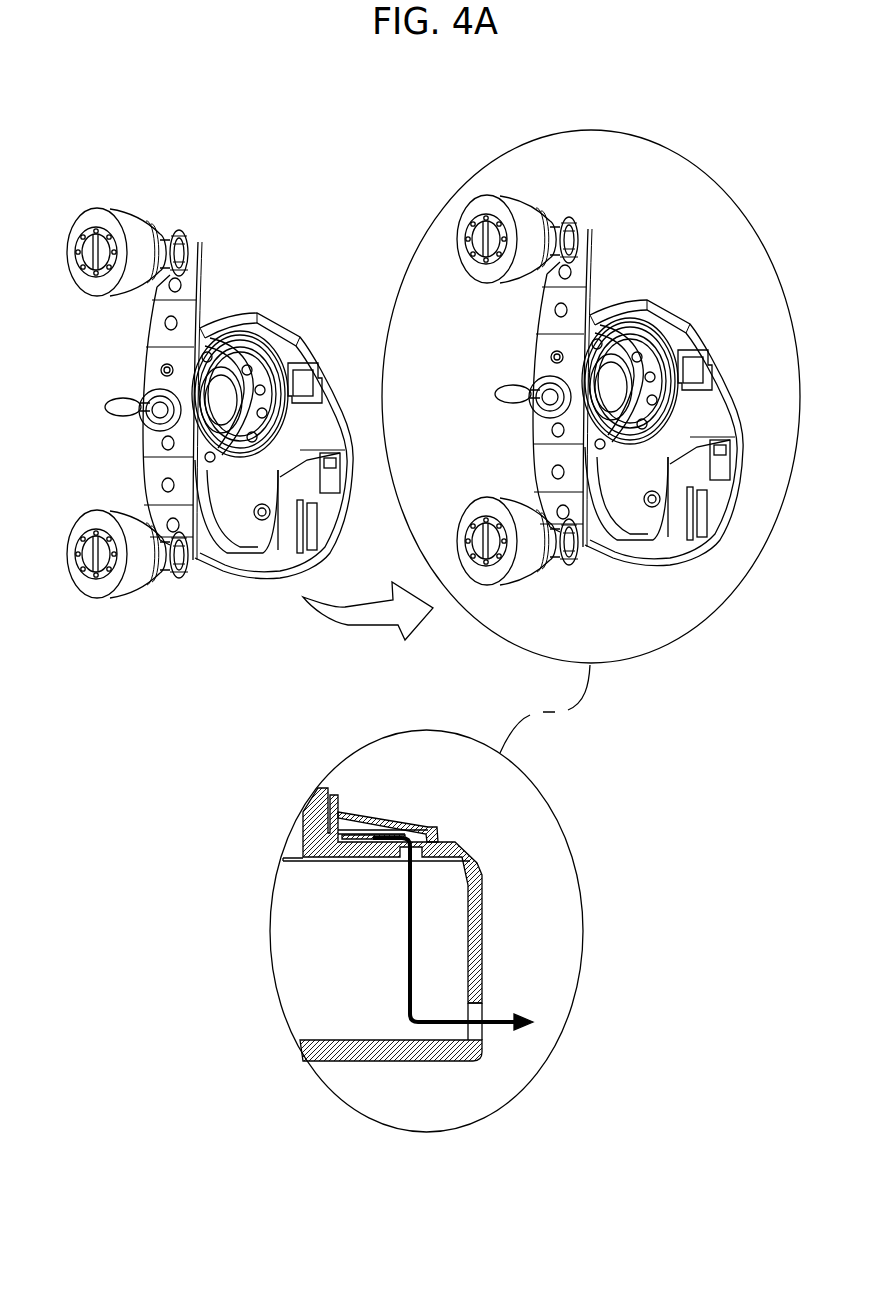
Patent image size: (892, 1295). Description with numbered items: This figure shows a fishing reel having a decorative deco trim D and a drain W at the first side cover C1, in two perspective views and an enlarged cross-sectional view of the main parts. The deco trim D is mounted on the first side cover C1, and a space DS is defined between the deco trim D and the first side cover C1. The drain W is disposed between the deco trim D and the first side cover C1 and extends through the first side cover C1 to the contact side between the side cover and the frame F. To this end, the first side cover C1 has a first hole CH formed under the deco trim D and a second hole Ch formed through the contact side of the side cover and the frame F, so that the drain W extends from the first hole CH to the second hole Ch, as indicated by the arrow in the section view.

The first side cover C1 is at (232, 300).
The deco trim D is at (257, 377).
The space DS is at (358, 838).
The first hole CH is at (417, 857).
The second hole Ch is at (462, 1038).
The drain W is at (468, 938).
The frame F is at (423, 1062).